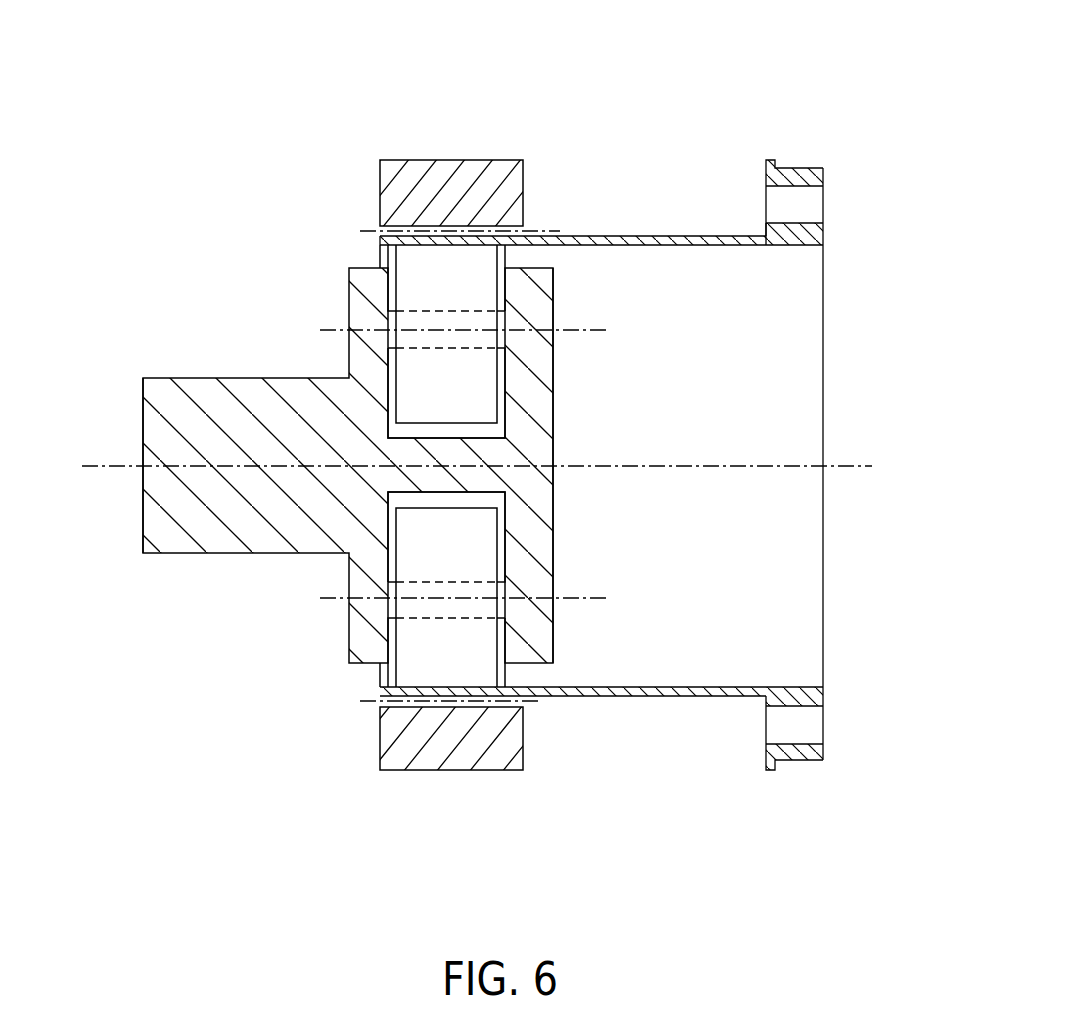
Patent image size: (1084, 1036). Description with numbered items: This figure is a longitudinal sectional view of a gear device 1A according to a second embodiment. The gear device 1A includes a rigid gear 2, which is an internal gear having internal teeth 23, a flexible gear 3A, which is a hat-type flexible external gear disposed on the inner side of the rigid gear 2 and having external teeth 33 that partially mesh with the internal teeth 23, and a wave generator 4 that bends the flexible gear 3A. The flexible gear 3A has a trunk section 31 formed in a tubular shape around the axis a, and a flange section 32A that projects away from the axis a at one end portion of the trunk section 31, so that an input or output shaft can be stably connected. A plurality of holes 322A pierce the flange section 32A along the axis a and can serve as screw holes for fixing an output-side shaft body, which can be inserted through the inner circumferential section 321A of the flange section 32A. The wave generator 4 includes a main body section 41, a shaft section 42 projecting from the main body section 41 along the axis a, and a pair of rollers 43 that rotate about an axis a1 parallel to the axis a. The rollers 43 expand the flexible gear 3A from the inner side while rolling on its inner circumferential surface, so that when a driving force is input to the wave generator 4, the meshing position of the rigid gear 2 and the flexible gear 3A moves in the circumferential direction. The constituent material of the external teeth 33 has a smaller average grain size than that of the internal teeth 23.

The gear device 1A is at (668, 66).
The rigid gear 2 is at (496, 149).
The internal teeth 23 is at (522, 244).
The flexible gear 3A is at (683, 224).
The trunk section 31 is at (638, 700).
The flange section 32A is at (775, 771).
The inner circumferential section 321A is at (800, 243).
The holes 322A is at (800, 185).
The external teeth 33 is at (402, 228).
The wave generator 4 is at (246, 367).
The main body section 41 is at (553, 437).
The shaft section 42 is at (228, 553).
The rollers 43 is at (500, 372).
The axis a is at (117, 468).
The axis a1 is at (596, 330).